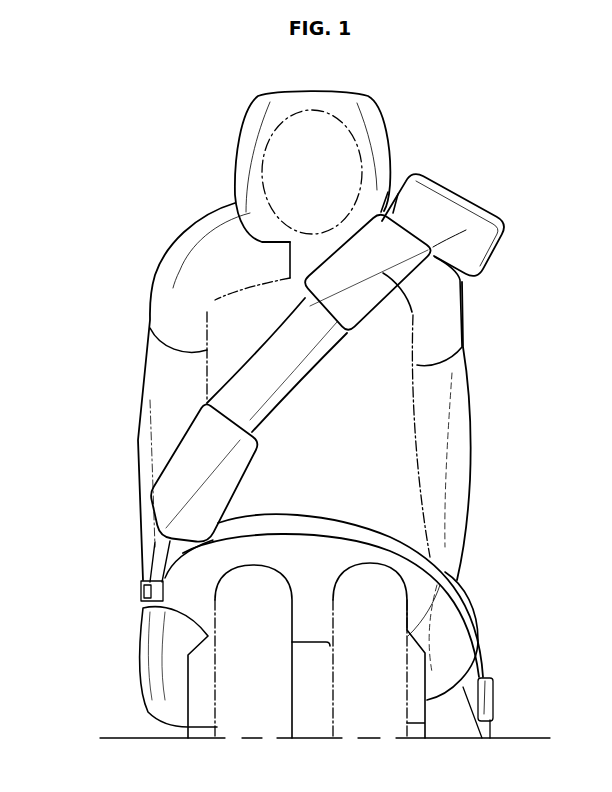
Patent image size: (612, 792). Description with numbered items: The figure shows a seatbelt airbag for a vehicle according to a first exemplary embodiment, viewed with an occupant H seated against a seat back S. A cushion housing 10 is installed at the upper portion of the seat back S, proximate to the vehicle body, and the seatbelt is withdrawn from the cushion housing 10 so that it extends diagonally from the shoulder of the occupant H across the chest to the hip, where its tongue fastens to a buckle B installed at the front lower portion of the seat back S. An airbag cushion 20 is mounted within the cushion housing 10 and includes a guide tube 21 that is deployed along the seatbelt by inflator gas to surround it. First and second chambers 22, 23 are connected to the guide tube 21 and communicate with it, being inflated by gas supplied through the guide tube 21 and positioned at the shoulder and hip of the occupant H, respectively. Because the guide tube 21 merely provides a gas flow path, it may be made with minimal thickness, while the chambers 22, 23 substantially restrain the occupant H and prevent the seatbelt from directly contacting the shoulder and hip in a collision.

The cushion housing 10 is at (490, 194).
The airbag cushion 20 is at (307, 456).
The guide tube 21 is at (272, 352).
The first chamber 22 is at (383, 275).
The second chamber 23 is at (195, 460).
The seat back S is at (198, 235).
The occupant H is at (380, 417).
The buckle B is at (141, 594).